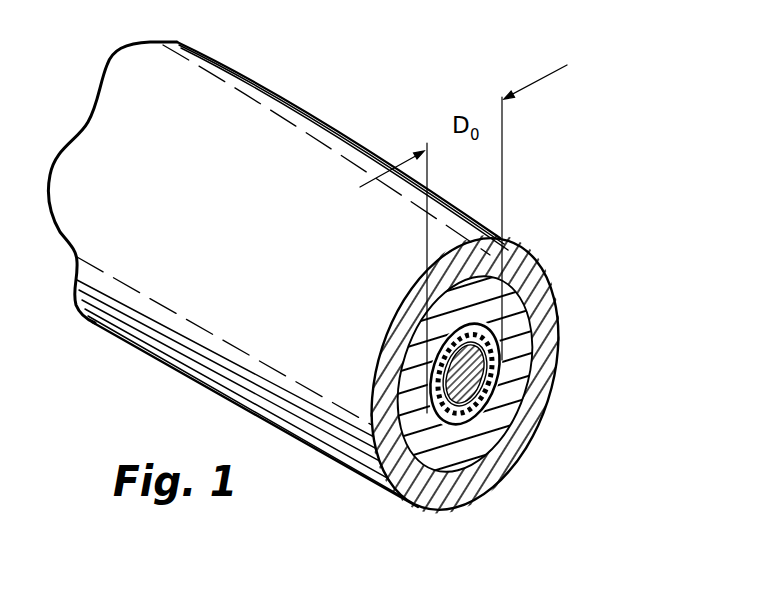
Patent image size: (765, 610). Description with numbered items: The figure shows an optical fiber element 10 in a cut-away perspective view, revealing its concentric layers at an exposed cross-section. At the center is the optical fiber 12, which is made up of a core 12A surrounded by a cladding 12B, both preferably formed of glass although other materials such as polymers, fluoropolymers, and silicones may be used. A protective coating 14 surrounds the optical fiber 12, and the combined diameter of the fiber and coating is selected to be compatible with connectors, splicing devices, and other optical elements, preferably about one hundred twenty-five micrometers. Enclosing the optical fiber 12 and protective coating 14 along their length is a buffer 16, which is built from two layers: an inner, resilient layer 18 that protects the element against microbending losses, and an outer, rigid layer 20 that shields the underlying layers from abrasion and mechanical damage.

The optical fiber element 10 is at (458, 56).
The optical fiber 12 is at (496, 402).
The core 12A is at (499, 378).
The cladding 12B is at (456, 422).
The protective coating 14 is at (506, 349).
The buffer 16 is at (407, 522).
The inner, resilient layer 18 is at (506, 446).
The outer, rigid layer 20 is at (531, 268).